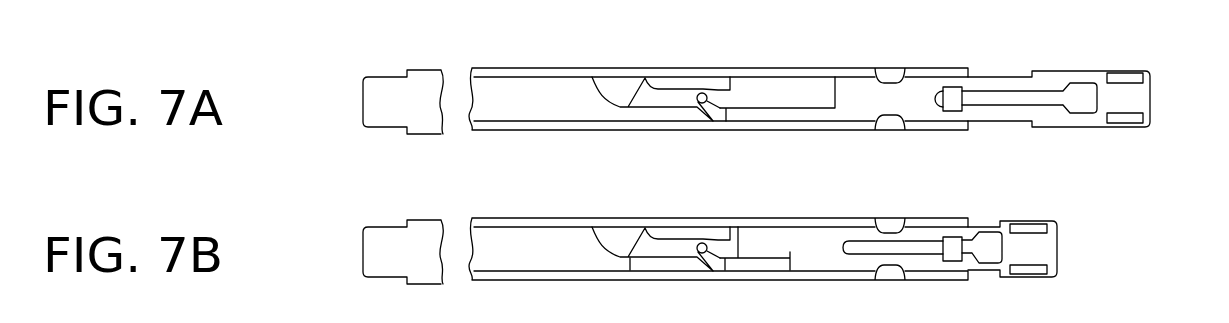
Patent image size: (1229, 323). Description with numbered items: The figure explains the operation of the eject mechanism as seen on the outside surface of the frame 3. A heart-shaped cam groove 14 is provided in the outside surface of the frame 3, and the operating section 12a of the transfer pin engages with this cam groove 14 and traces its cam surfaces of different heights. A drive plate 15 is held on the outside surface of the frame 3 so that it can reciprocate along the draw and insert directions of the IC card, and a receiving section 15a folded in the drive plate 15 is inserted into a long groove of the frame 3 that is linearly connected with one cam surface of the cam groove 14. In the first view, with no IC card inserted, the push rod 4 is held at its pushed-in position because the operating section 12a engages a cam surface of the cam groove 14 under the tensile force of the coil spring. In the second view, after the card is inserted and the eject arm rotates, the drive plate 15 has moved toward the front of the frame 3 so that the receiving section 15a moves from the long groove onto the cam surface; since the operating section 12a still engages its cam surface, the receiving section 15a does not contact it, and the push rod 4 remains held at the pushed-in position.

In FIG. 7A, the frame 3 is at (938, 72).
In FIG. 7A, the push rod 4 is at (373, 102).
In FIG. 7B, the push rod 4 is at (373, 252).
In FIG. 7A, the operating section 12a is at (705, 93).
In FIG. 7B, the operating section 12a is at (703, 243).
In FIG. 7A, the cam groove 14 is at (662, 82).
In FIG. 7A, the drive plate 15 is at (1147, 95).
In FIG. 7B, the drive plate 15 is at (1045, 247).
In FIG. 7A, the receiving section 15a is at (813, 117).
In FIG. 7B, the receiving section 15a is at (686, 262).